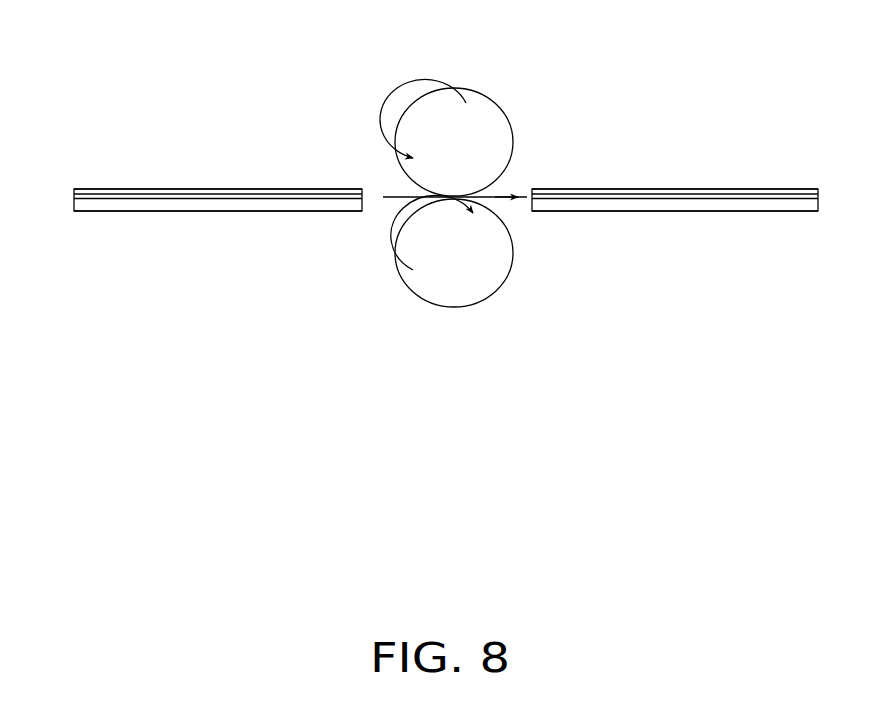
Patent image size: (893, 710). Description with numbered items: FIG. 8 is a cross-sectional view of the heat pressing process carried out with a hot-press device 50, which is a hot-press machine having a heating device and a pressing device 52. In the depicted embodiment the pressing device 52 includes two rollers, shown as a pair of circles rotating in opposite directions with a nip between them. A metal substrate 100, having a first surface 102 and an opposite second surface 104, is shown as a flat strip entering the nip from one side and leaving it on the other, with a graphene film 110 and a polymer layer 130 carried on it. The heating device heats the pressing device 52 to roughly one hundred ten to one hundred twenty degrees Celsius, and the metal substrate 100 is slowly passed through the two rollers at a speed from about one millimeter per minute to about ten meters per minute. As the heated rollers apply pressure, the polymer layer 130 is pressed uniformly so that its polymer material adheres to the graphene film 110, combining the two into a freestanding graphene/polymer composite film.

The hot-press device 50 is at (449, 182).
The pressing device 52 is at (415, 105).
The metal substrate 100 is at (195, 201).
The first surface 102 is at (98, 200).
The second surface 104 is at (200, 212).
The graphene film 110 is at (235, 197).
The polymer layer 130 is at (170, 192).